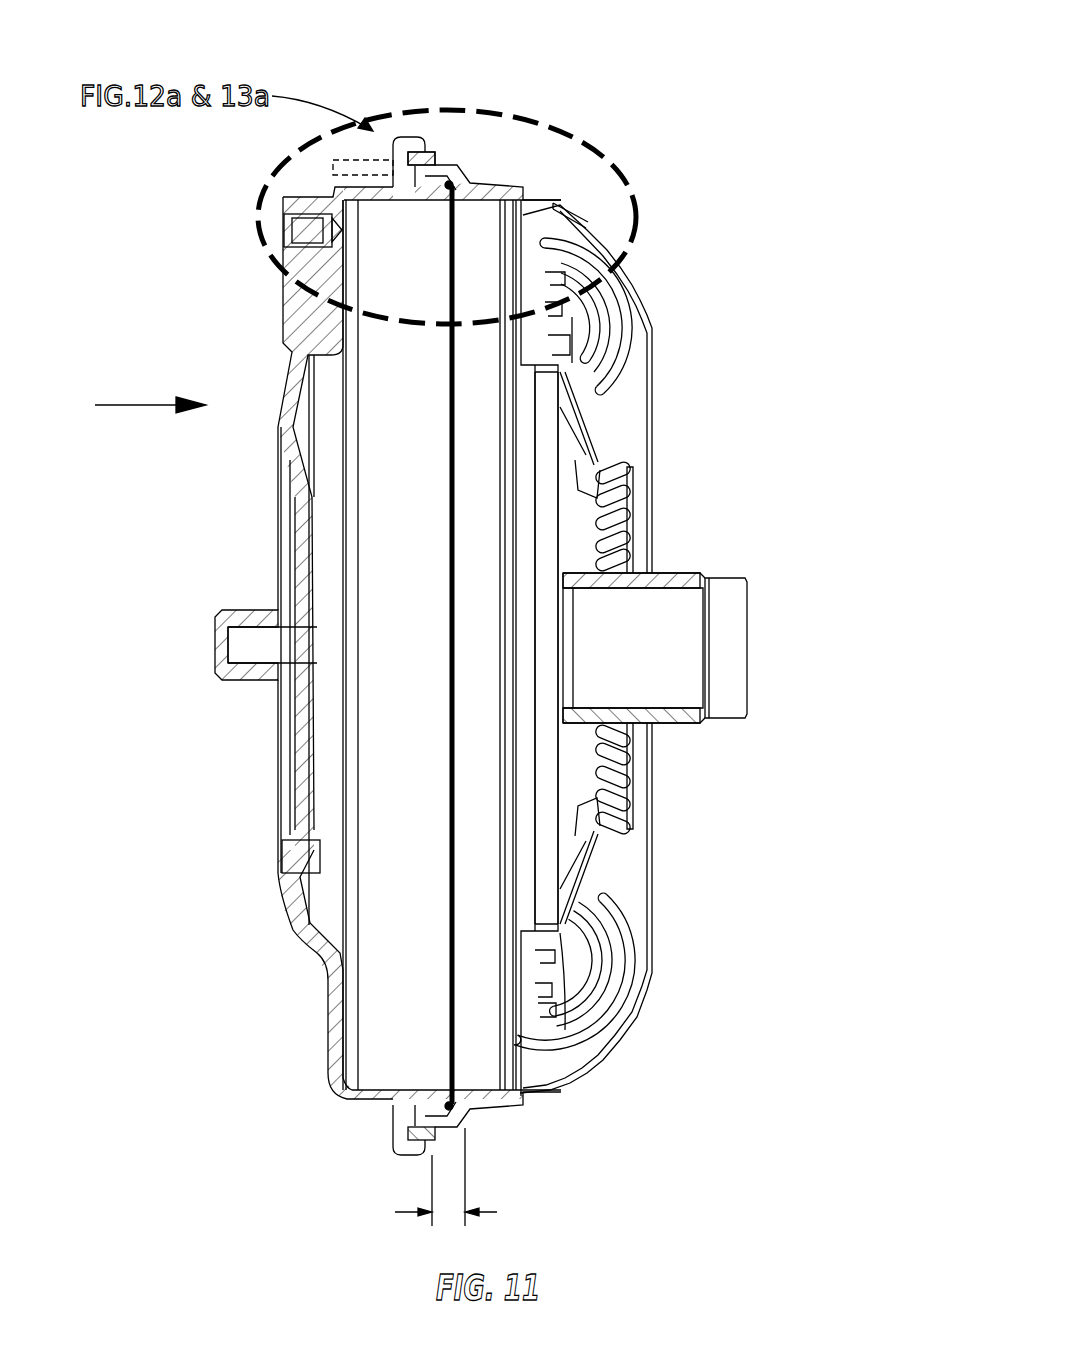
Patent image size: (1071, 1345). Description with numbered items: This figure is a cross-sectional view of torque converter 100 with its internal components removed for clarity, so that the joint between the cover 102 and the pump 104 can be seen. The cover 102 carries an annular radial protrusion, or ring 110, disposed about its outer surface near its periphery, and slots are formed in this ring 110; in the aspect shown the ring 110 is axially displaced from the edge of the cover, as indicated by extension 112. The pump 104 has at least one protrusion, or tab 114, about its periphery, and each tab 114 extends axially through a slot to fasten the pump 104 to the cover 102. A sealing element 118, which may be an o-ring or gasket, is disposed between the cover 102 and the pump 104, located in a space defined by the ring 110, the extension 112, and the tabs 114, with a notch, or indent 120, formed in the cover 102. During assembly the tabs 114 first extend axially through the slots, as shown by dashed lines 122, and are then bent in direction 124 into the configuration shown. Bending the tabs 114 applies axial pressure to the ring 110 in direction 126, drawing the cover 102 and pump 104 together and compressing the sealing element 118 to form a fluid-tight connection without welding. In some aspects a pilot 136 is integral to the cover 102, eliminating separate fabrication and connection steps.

The torque converter 100 is at (786, 112).
The cover 102 is at (290, 306).
The pump 104 is at (632, 288).
The annular radial protrusion 110 is at (425, 150).
The extension 112 is at (492, 1213).
The protrusion 114 is at (398, 138).
The sealing element 118 is at (453, 183).
The notch 120 is at (450, 184).
The dashed lines 122 is at (333, 170).
The direction 124 is at (366, 152).
The direction 126 is at (142, 404).
The pilot 136 is at (223, 613).